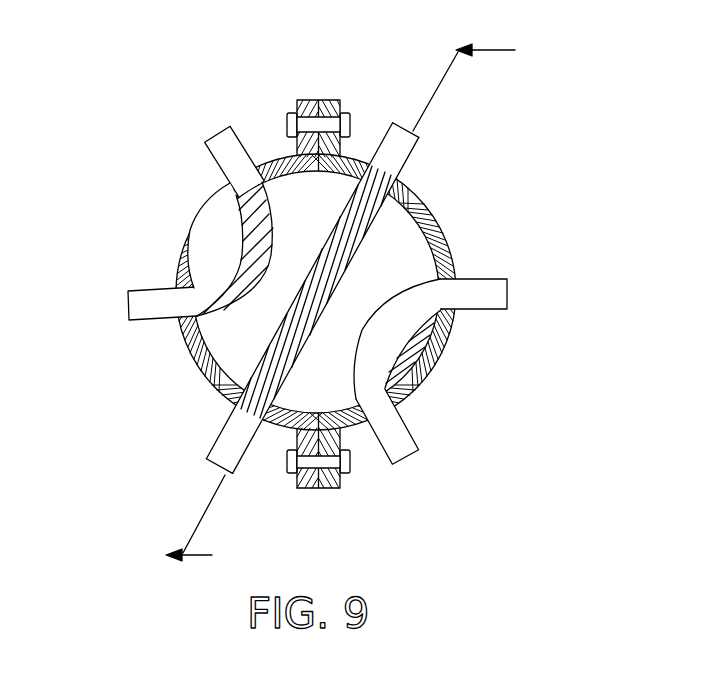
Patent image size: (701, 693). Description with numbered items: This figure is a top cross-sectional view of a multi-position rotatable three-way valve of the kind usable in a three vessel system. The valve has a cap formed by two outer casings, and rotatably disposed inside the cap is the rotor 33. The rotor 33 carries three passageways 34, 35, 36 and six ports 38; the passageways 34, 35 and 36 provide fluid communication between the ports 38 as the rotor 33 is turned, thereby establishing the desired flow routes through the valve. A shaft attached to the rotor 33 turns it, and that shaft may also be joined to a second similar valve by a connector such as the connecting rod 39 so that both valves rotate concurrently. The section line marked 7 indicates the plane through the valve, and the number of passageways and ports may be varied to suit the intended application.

The rotor 33 is at (390, 260).
The passageway 34 is at (378, 340).
The passageway 35 is at (276, 356).
The passageway 36 is at (248, 267).
The ports 38 is at (219, 134).
The connecting rod 39 is at (348, 114).
The section line 7-7' 7 is at (352, 302).